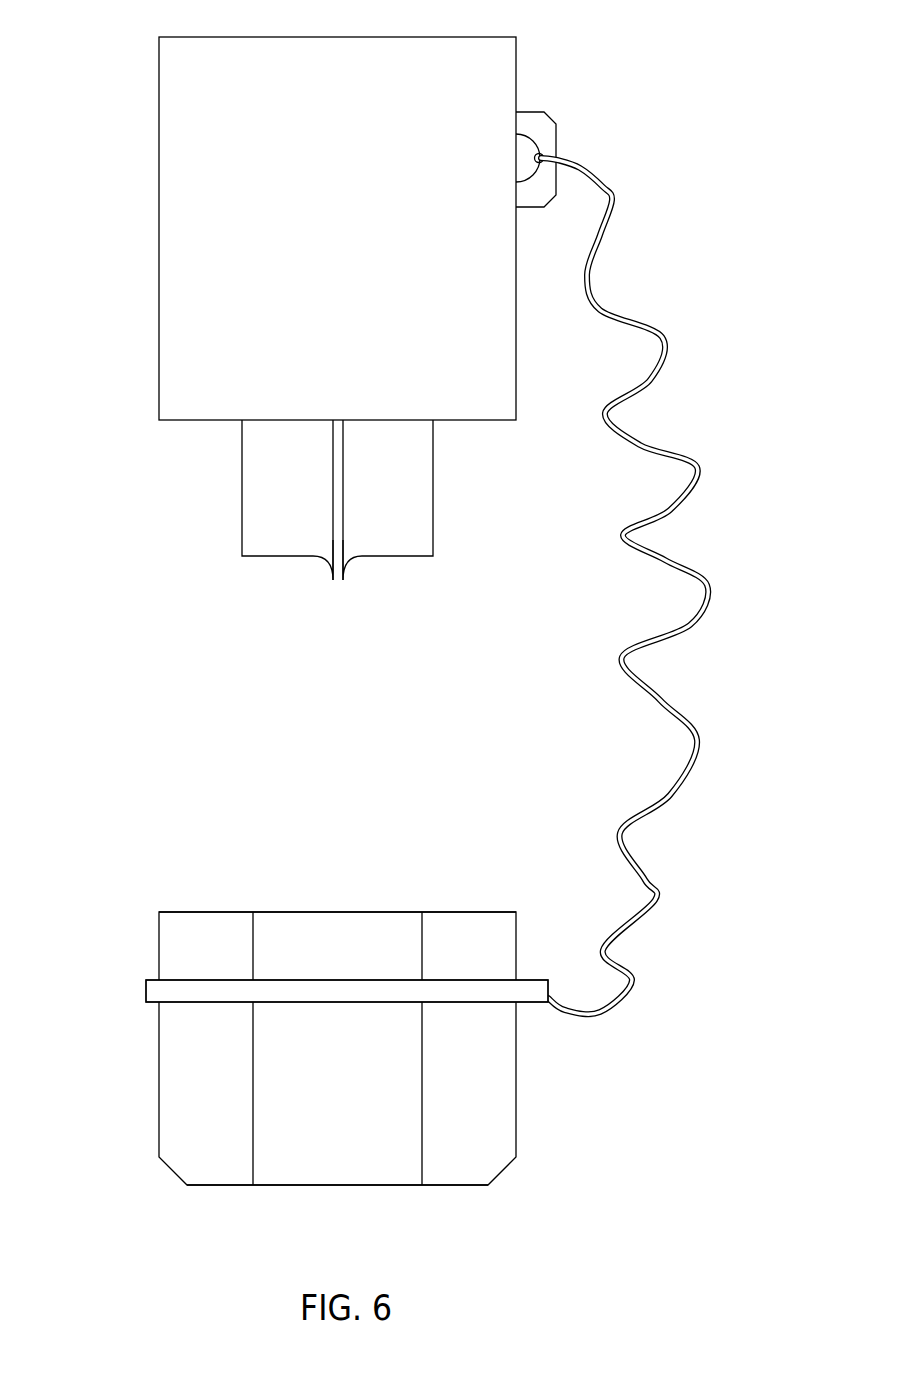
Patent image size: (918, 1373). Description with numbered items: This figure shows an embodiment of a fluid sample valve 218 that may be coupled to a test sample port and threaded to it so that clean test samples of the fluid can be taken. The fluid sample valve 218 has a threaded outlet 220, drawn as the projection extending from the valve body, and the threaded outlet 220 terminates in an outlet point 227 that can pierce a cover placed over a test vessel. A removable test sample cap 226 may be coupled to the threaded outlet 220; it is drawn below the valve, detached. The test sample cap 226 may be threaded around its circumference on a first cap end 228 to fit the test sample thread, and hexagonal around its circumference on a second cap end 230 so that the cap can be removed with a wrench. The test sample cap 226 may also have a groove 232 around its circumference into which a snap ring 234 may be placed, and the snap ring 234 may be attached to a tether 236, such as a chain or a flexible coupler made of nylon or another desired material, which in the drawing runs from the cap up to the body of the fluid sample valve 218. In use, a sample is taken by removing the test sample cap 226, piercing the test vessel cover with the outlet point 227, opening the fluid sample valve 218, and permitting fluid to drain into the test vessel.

The fluid sample valve 218 is at (674, 91).
The threaded outlet 220 is at (433, 486).
The outlet point 227 is at (347, 563).
The tether 236 is at (659, 429).
The test sample cap 226 is at (488, 1076).
The first cap end 228 is at (350, 910).
The second cap end 230 is at (350, 1185).
The groove 232 is at (215, 1003).
The snap ring 234 is at (187, 992).